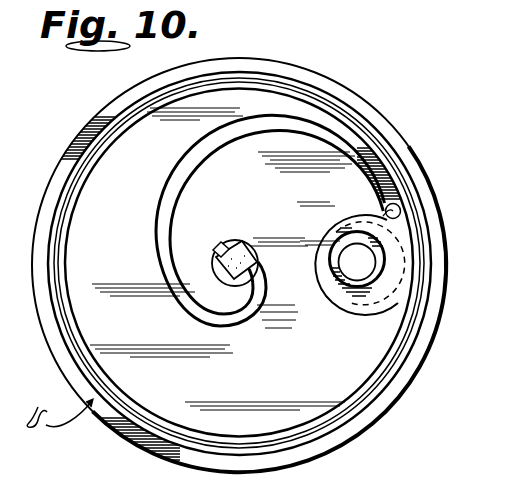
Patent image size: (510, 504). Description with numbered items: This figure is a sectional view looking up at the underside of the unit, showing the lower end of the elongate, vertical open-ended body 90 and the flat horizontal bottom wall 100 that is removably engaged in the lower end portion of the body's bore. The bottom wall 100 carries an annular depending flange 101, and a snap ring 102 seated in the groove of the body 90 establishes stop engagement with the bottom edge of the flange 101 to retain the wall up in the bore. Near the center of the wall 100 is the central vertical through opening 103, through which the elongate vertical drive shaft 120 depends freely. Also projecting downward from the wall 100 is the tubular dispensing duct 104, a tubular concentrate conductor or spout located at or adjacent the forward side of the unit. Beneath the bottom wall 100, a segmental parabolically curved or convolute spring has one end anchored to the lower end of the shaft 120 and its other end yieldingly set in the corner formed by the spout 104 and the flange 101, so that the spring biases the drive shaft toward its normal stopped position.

The body 90 is at (401, 77).
The bottom wall 100 is at (118, 194).
The depending flange 101 is at (66, 266).
The snap ring 102 is at (50, 226).
The central vertical through opening 103 is at (222, 280).
The tubular dispensing duct 104 is at (370, 300).
The drive shaft 120 is at (272, 214).